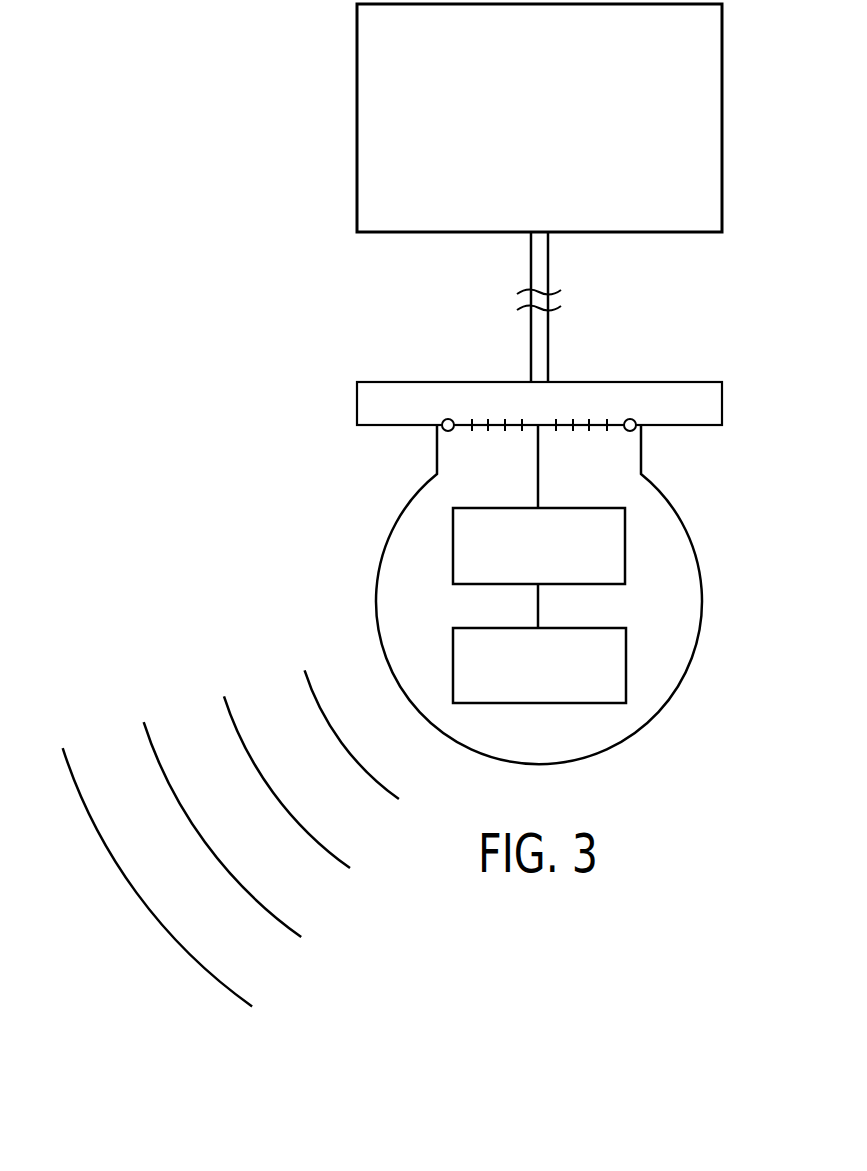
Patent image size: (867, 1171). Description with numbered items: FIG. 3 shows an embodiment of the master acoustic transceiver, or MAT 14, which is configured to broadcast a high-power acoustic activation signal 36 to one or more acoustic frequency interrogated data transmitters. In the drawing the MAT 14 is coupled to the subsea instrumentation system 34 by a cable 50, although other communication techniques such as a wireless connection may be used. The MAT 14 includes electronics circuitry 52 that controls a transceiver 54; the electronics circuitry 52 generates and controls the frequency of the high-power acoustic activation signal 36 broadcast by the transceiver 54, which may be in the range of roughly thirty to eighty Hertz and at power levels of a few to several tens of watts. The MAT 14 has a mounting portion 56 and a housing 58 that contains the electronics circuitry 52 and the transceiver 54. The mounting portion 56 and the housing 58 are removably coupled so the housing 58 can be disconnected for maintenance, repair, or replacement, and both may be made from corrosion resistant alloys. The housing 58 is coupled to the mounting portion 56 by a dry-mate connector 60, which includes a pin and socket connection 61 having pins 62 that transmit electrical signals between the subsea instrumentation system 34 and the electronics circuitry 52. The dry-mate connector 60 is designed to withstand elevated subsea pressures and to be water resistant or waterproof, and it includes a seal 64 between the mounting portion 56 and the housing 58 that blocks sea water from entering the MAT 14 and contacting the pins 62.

The master acoustic transceiver 14 is at (793, 537).
The subsea instrumentation system 34 is at (722, 117).
The high-power acoustic activation signal 36 is at (177, 669).
The cable 50 is at (548, 262).
The electronics circuitry 52 is at (625, 563).
The transceiver 54 is at (626, 653).
The mounting portion 56 is at (722, 403).
The housing 58 is at (702, 597).
The dry-mate connector 60 is at (428, 432).
The pin and socket connection 61 is at (578, 419).
The pins 62 is at (522, 431).
The seal 64 is at (446, 433).